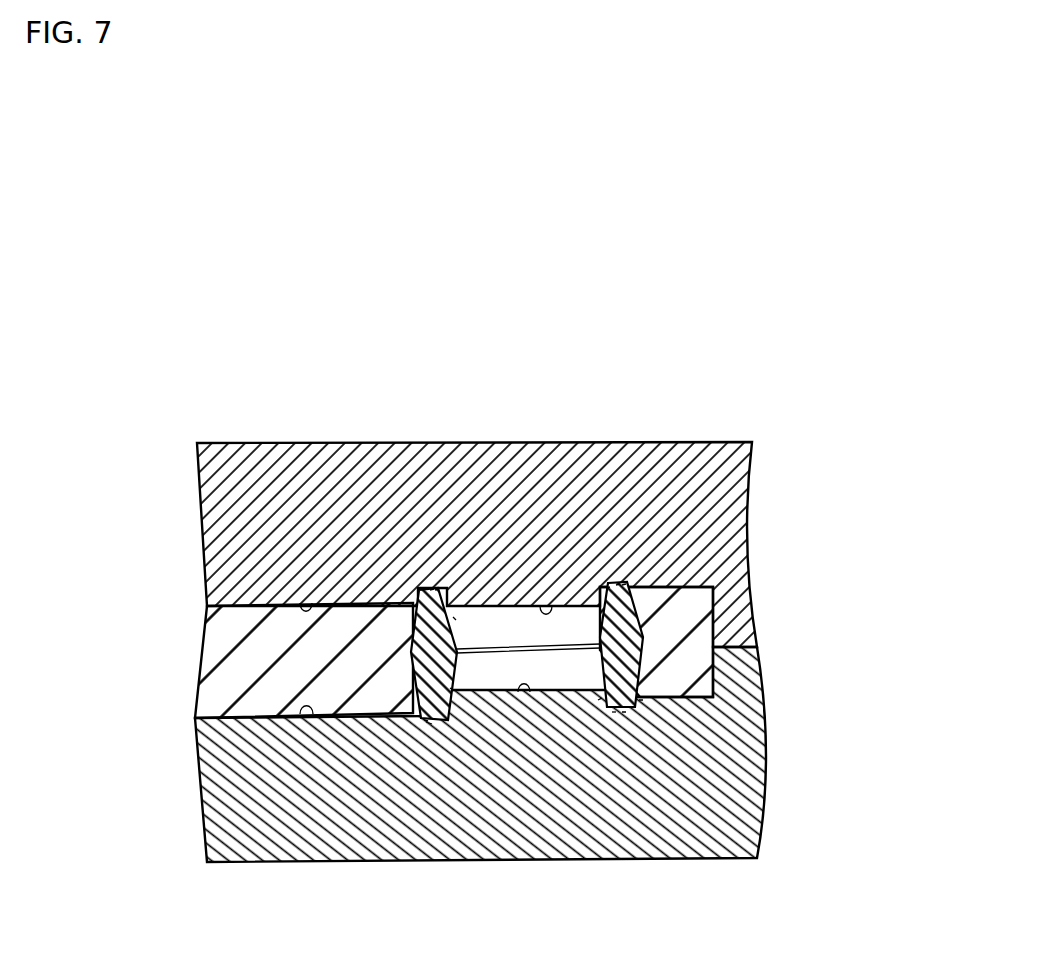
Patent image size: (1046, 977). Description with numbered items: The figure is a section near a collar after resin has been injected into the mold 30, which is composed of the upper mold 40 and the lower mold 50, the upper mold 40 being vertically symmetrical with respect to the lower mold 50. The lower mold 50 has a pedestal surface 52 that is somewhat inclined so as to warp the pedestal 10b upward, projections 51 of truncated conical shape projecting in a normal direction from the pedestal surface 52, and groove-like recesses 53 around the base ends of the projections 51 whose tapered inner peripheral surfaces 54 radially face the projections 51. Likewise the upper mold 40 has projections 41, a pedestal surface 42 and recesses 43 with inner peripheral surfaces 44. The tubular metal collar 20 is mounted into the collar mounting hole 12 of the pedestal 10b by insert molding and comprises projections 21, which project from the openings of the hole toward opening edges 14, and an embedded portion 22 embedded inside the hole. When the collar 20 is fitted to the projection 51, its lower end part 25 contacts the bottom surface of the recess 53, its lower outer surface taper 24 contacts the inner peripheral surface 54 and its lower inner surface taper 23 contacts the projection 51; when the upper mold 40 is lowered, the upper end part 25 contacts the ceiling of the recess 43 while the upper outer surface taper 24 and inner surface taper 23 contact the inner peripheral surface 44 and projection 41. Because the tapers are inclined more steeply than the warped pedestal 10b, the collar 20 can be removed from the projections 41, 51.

The mold 30 is at (434, 644).
The upper mold 40 is at (720, 466).
The lower mold 50 is at (728, 822).
The pedestal 10b is at (215, 706).
The collar mounting hole 12 is at (449, 600).
The opening edge 14 is at (432, 591).
The collar 20 is at (638, 595).
The projection 21 is at (618, 585).
The embedded portion 22 is at (600, 700).
The inner surface taper 23 is at (453, 617).
The outer surface taper 24 is at (624, 585).
The end part 25 is at (441, 588).
The projection 41 is at (541, 604).
The pedestal surface 42 is at (301, 601).
The recess 43 is at (608, 588).
The inner peripheral surface 44 is at (437, 590).
The projection 51 is at (522, 696).
The pedestal surface 52 is at (306, 716).
The recess 53 is at (614, 712).
The inner peripheral surface 54 is at (430, 725).